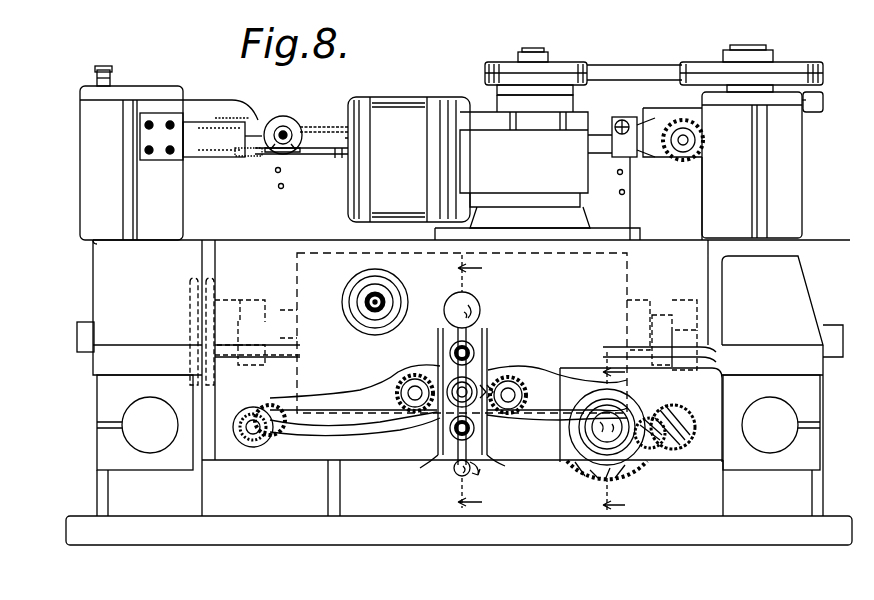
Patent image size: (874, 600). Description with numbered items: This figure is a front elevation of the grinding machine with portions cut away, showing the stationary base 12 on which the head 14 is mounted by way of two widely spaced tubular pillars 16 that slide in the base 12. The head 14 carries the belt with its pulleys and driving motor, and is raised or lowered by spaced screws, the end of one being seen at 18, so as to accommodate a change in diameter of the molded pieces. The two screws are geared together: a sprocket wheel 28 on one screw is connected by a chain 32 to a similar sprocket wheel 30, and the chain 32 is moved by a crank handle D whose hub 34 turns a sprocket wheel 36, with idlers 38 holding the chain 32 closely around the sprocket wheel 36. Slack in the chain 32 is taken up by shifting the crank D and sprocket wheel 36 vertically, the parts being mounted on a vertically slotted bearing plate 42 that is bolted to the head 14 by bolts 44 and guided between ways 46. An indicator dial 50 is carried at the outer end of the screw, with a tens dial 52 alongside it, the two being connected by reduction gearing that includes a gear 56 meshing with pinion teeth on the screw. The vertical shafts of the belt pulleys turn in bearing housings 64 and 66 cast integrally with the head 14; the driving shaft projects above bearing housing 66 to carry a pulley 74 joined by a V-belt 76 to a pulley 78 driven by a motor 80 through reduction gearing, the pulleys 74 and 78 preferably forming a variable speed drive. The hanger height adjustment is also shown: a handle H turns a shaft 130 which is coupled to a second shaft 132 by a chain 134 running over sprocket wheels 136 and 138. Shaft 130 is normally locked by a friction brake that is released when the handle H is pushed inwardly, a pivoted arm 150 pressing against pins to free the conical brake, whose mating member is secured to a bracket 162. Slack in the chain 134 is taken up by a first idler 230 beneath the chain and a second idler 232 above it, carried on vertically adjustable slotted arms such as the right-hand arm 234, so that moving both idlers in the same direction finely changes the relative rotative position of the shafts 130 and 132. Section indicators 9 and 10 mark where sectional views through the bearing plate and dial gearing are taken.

The base 12 is at (834, 516).
The head 14 is at (812, 325).
The tubular pillars 16 is at (148, 408).
The screw end 18 is at (250, 448).
The sprocket wheel 28 is at (668, 418).
The sprocket wheel 30 is at (285, 428).
The chain 32 is at (324, 405).
The hub 34 is at (472, 365).
The sprocket wheel 36 is at (495, 378).
The idlers 38 is at (410, 377).
The bearing plate 42 is at (452, 458).
The bolts 44 is at (474, 338).
The ways 46 is at (440, 436).
The indicator dial 50 is at (690, 450).
The tens dial 52 is at (575, 462).
The gear 56 is at (645, 458).
The bearing housing 64 is at (82, 188).
The bearing housing 66 is at (796, 176).
The pulley 74 is at (775, 62).
The V-belt 76 is at (623, 66).
The pulley 78 is at (562, 66).
The motor 80 is at (410, 97).
The shaft 130 is at (205, 142).
The shaft 132 is at (666, 174).
The chain 134 is at (316, 126).
The sprocket wheel 136 is at (258, 122).
The sprocket wheel 138 is at (697, 141).
The arm 150 is at (240, 160).
The bracket 162 is at (160, 152).
The first idler 230 is at (290, 152).
The second idler 232 is at (622, 118).
The right-hand arm 234 is at (626, 160).
The section line 9- 9 is at (478, 386).
The section line 10- 10 is at (628, 436).
The handle H is at (288, 117).
The crank handle D is at (476, 478).